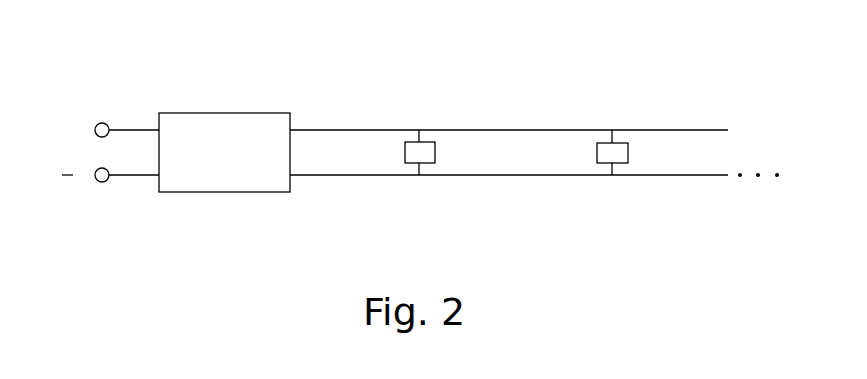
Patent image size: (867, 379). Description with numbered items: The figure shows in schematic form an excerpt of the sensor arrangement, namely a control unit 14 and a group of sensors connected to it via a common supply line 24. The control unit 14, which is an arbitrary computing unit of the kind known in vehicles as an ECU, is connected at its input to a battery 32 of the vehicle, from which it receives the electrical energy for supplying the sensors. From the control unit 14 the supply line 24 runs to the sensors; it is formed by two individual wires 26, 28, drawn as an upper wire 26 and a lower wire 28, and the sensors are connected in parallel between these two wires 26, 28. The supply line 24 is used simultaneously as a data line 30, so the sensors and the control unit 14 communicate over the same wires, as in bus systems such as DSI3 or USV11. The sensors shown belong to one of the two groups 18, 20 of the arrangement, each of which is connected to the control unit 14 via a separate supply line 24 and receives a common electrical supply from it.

The control unit 14 is at (223, 113).
The first group 18 is at (702, 99).
The second group 20 is at (620, 143).
The supply line 24 is at (531, 115).
The wire 26 is at (347, 130).
The wire 28 is at (350, 175).
The data line 30 is at (469, 153).
The battery 32 is at (96, 97).